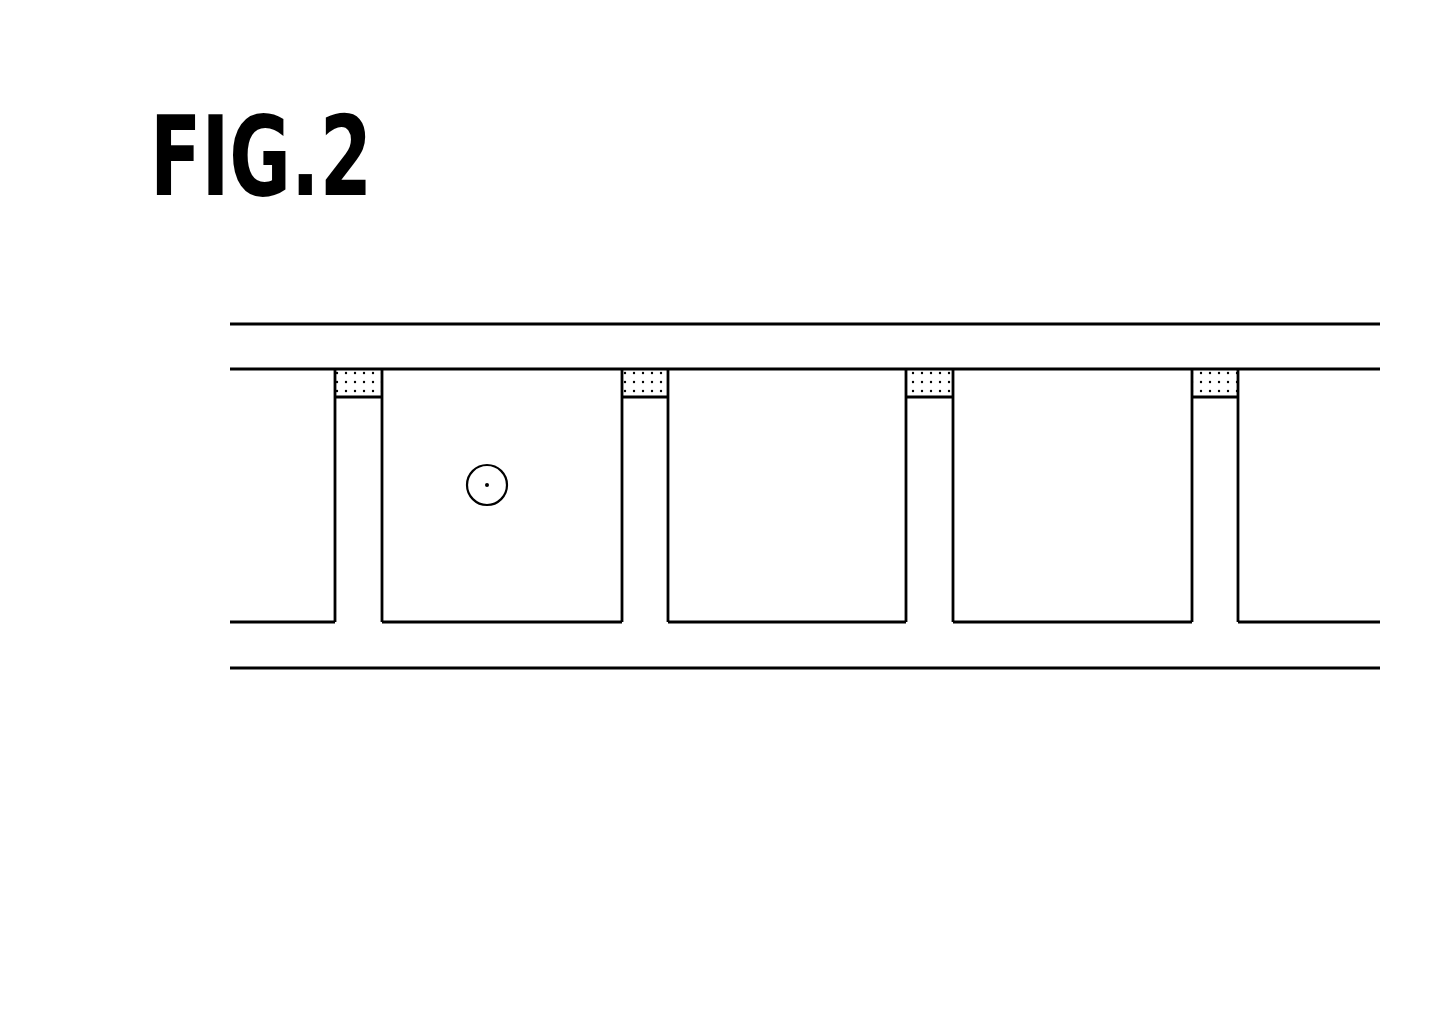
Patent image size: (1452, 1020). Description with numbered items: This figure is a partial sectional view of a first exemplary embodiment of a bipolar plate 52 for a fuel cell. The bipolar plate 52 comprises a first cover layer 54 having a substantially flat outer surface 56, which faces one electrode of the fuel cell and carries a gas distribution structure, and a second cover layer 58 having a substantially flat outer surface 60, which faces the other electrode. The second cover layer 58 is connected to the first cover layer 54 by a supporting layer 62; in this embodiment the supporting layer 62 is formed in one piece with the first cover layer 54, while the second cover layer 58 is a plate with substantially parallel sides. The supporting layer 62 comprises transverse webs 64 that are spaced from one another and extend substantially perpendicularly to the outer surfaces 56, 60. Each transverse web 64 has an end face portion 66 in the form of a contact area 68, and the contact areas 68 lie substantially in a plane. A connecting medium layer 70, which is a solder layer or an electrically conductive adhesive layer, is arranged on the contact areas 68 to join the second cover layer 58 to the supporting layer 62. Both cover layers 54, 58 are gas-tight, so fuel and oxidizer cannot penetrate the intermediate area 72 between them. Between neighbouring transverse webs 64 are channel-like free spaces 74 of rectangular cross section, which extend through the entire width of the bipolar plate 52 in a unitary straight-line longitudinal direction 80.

The bipolar plate 52 is at (841, 292).
The first cover layer 54 is at (932, 655).
The outer surface 56 is at (1113, 668).
The second cover layer 58 is at (1211, 342).
The outer surface 60 is at (1341, 323).
The supporting layer 62 is at (1240, 476).
The transverse web 64 is at (925, 512).
The end face portion 66 is at (649, 392).
The contact area 68 is at (669, 397).
The connecting medium layer 70 is at (932, 392).
The intermediate area 72 is at (1298, 562).
The channel-like free space 74 is at (1113, 412).
The longitudinal direction 80 is at (492, 494).